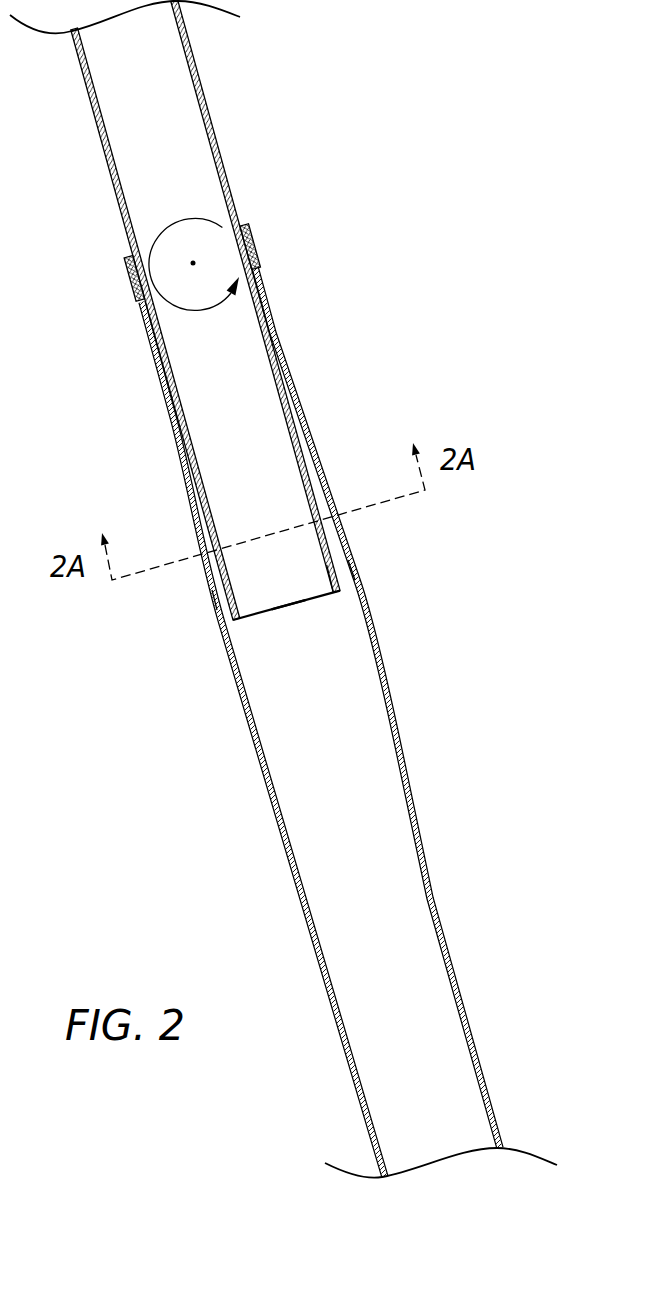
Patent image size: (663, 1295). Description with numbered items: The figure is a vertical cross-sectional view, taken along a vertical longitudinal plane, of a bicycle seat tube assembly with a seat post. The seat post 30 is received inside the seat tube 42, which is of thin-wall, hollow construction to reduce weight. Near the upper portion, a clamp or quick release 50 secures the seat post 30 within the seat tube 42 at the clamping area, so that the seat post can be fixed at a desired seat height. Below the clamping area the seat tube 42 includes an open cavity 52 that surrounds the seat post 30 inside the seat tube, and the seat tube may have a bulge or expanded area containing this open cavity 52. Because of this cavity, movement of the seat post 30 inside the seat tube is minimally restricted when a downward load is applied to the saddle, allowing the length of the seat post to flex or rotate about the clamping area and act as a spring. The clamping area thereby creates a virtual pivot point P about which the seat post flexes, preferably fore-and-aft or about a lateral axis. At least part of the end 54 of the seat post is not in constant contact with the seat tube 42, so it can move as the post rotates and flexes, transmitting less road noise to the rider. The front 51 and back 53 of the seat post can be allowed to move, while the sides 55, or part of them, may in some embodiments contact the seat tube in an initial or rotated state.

The seat post 30 is at (160, 88).
The seat tube 42 is at (465, 1018).
The clamp or quick release 50 is at (257, 238).
The front of the seat post 51 is at (326, 565).
The open cavity 52 is at (347, 578).
The back of the seat post 53 is at (214, 609).
The end of the seat post 54 is at (263, 614).
The sides of the seat post 55 is at (283, 588).
The virtual pivot point P is at (193, 263).